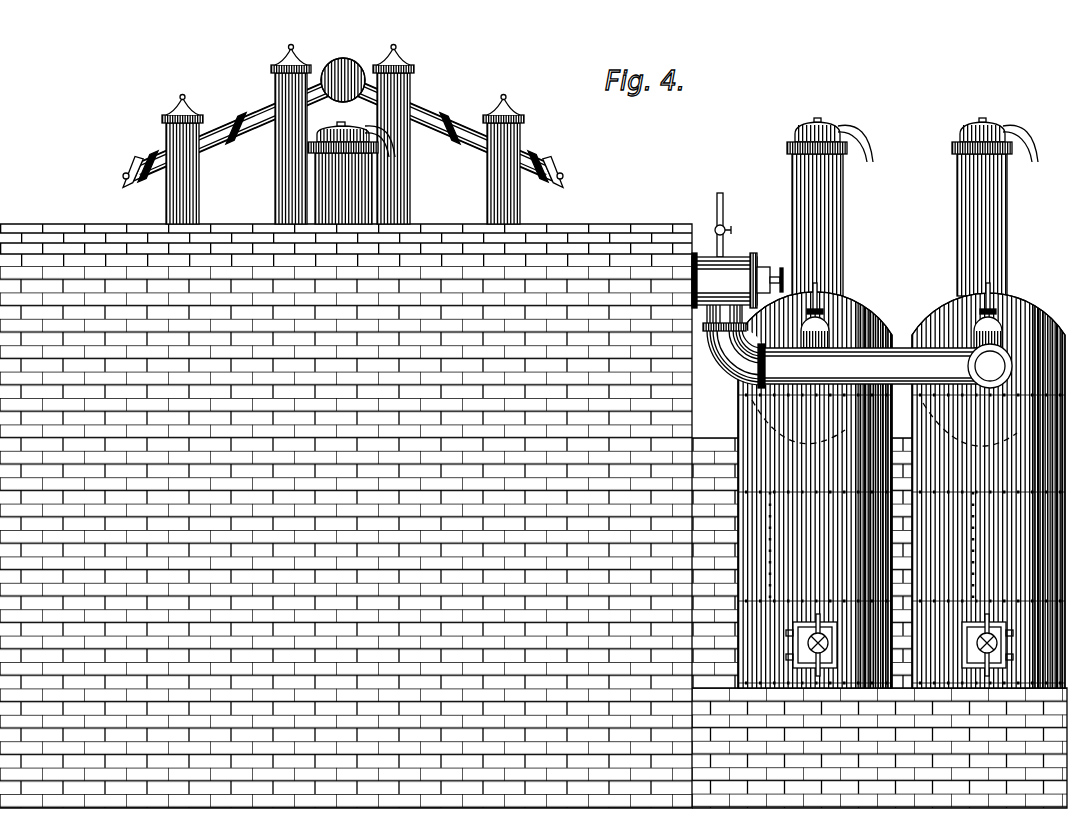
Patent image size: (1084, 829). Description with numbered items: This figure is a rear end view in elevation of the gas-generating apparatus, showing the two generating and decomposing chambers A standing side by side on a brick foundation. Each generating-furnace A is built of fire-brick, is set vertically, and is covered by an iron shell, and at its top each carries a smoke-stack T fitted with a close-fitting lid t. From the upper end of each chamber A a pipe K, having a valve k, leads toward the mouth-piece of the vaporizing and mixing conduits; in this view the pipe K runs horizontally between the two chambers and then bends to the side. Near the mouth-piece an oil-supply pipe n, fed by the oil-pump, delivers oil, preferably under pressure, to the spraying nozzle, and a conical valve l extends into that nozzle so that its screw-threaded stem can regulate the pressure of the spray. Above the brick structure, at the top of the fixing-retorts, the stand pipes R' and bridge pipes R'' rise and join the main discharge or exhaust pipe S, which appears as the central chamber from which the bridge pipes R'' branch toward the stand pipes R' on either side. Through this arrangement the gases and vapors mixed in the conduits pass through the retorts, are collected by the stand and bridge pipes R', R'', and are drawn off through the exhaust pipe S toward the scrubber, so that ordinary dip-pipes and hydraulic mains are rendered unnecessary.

The main discharge or exhaust pipe S is at (343, 68).
The bridge pipes R'' is at (343, 124).
The stand pipes R' is at (343, 152).
The smoke-stack T is at (908, 225).
The close-fitting lid t is at (909, 136).
The generating and decomposing chamber A is at (901, 490).
The valve k is at (832, 306).
The pipe K is at (904, 345).
The oil-supply pipe n is at (730, 225).
The conical valve l is at (770, 270).